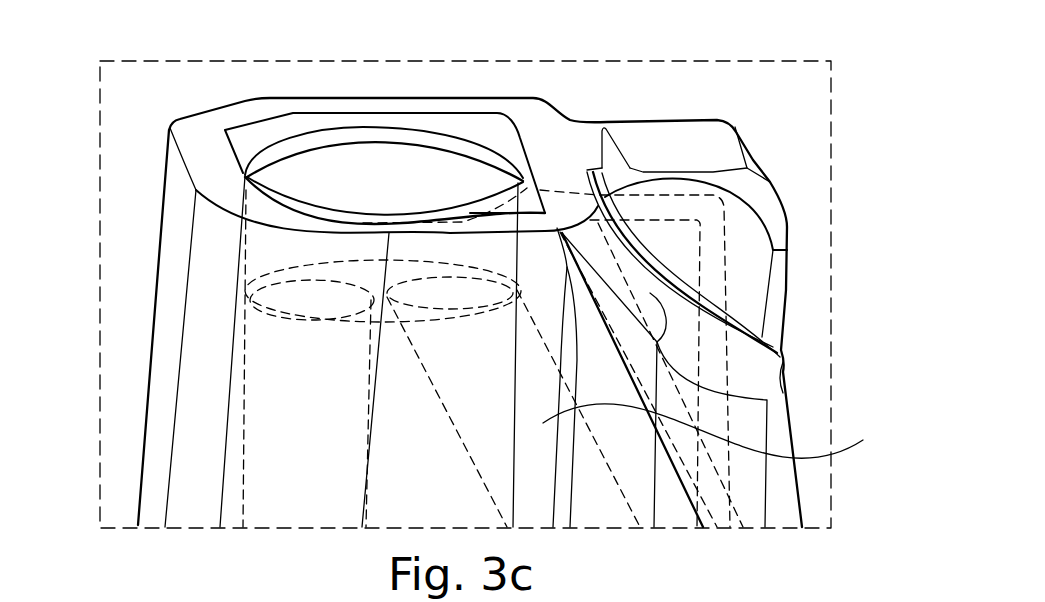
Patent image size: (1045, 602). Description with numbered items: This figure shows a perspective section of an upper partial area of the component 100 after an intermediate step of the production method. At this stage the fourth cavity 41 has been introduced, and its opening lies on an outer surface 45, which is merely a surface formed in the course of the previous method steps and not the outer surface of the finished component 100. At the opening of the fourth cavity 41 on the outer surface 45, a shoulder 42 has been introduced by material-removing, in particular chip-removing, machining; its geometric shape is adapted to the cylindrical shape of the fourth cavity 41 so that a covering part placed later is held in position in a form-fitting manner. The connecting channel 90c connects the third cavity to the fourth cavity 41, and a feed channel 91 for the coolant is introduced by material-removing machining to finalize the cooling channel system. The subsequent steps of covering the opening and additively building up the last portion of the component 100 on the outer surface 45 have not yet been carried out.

The component 100 is at (708, 108).
The outer surface 45 is at (548, 143).
The shoulder 42 is at (263, 148).
The fourth cavity 41 is at (288, 255).
The feed channel 91 is at (288, 402).
The connecting channel 90c is at (731, 431).